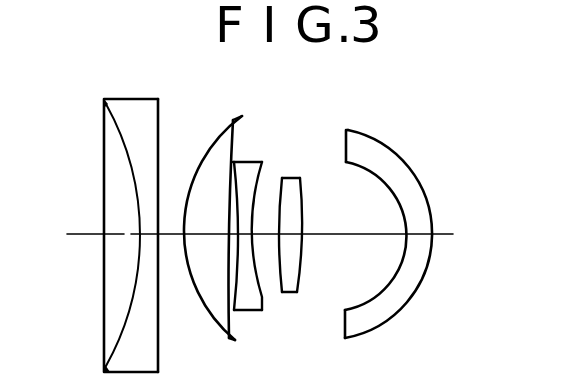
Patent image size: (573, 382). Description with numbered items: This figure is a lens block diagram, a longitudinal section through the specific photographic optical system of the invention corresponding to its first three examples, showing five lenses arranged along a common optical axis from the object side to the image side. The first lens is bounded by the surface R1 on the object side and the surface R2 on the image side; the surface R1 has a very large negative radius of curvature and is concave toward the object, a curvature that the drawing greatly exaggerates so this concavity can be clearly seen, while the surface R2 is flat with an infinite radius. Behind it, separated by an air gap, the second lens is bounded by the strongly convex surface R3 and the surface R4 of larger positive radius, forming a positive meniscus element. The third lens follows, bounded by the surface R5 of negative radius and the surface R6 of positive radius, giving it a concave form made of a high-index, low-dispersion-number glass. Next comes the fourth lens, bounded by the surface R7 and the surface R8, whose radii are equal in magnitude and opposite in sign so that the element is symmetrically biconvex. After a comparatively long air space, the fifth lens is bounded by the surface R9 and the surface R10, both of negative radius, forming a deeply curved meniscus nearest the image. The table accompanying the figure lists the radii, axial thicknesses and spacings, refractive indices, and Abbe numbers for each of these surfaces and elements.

The first lens surface R1 is at (106, 104).
The second lens surface R2 is at (158, 103).
The third lens surface R3 is at (210, 152).
The fourth lens surface R4 is at (235, 134).
The fifth lens surface R5 is at (240, 172).
The sixth lens surface R6 is at (264, 166).
The seventh lens surface R7 is at (281, 180).
The eighth lens surface R8 is at (302, 186).
The ninth lens surface R9 is at (350, 164).
The tenth lens surface R10 is at (393, 150).